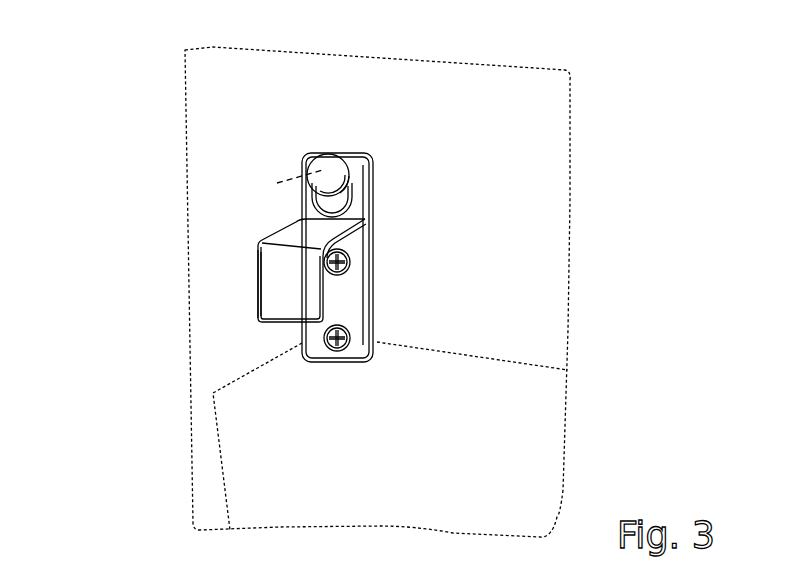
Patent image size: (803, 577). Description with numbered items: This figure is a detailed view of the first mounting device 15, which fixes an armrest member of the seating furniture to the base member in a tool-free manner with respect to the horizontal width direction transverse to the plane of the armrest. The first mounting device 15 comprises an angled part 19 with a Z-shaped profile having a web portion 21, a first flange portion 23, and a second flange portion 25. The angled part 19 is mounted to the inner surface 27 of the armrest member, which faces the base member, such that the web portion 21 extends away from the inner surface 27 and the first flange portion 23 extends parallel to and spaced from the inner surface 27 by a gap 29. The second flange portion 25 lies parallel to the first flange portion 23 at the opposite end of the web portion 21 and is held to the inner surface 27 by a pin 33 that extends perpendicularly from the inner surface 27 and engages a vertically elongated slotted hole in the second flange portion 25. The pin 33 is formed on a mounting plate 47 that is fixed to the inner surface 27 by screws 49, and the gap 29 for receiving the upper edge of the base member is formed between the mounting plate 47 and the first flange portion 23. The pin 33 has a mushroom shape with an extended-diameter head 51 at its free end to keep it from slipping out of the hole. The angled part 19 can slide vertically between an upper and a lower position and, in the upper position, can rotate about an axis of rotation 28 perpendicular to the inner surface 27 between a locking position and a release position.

The first mounting device 15 is at (155, 222).
The angled part 19 is at (283, 255).
The web portion 21 is at (308, 235).
The first flange portion 23 is at (283, 300).
The second flange portion 25 is at (352, 192).
The inner surface 27 is at (247, 92).
The axis of rotation 28 is at (317, 168).
The gap 29 is at (337, 296).
The pin 33 is at (491, 144).
The extended-diameter head 51 is at (338, 170).
The mounting plate 47 is at (353, 323).
The screws 49 is at (350, 259).